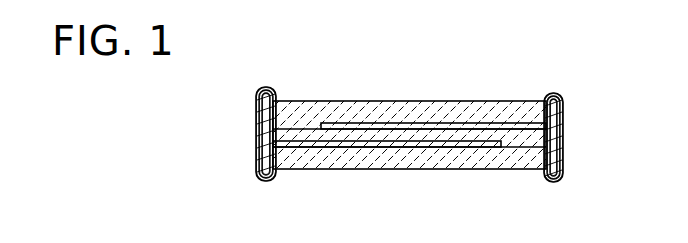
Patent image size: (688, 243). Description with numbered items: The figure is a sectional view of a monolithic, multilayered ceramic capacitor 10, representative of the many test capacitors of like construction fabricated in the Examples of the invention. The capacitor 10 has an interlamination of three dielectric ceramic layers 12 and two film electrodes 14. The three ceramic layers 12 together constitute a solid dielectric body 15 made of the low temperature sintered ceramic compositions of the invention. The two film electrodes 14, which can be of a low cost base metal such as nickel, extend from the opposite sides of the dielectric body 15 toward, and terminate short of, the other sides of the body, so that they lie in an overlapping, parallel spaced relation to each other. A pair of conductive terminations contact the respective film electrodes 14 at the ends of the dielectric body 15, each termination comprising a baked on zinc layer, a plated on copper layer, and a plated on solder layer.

The monolithic ceramic capacitor 10 is at (410, 132).
The dielectric ceramic layers 12 is at (409, 132).
The film electrodes 14 is at (461, 142).
The dielectric body 15 is at (452, 92).